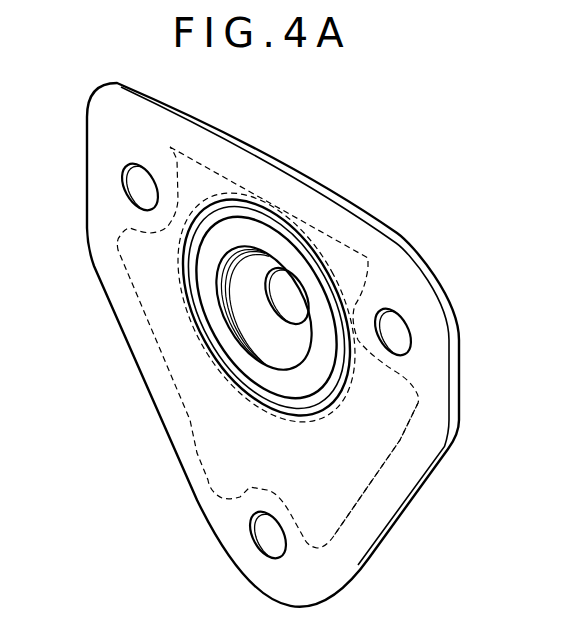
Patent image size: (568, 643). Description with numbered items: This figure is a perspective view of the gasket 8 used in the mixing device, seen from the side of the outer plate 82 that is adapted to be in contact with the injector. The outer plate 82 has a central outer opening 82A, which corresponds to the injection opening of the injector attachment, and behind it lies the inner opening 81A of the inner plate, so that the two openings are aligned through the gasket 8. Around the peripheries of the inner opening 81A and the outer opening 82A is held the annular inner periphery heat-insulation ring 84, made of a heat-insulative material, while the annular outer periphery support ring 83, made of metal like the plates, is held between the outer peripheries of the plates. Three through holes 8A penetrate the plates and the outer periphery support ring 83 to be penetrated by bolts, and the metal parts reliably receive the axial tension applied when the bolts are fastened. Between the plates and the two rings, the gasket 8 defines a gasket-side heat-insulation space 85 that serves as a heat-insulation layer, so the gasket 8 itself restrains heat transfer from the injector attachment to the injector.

The gasket 8 is at (421, 178).
The through hole 8A is at (124, 181).
The inner opening 81A is at (267, 306).
The outer plate 82 is at (208, 418).
The outer opening 82A is at (278, 382).
The outer periphery support ring 83 is at (412, 467).
The inner periphery heat-insulation ring 84 is at (273, 247).
The gasket-side heat-insulation space 85 is at (347, 482).